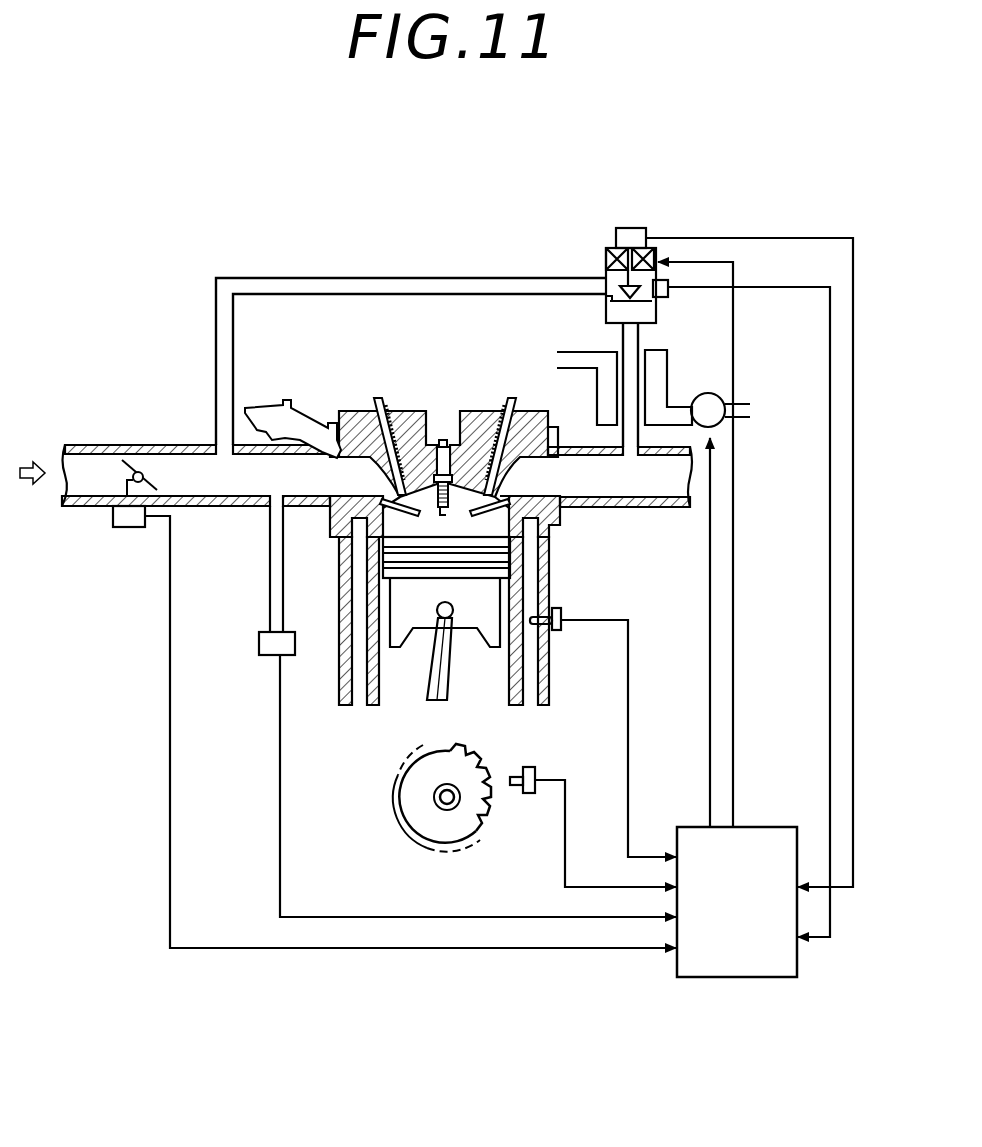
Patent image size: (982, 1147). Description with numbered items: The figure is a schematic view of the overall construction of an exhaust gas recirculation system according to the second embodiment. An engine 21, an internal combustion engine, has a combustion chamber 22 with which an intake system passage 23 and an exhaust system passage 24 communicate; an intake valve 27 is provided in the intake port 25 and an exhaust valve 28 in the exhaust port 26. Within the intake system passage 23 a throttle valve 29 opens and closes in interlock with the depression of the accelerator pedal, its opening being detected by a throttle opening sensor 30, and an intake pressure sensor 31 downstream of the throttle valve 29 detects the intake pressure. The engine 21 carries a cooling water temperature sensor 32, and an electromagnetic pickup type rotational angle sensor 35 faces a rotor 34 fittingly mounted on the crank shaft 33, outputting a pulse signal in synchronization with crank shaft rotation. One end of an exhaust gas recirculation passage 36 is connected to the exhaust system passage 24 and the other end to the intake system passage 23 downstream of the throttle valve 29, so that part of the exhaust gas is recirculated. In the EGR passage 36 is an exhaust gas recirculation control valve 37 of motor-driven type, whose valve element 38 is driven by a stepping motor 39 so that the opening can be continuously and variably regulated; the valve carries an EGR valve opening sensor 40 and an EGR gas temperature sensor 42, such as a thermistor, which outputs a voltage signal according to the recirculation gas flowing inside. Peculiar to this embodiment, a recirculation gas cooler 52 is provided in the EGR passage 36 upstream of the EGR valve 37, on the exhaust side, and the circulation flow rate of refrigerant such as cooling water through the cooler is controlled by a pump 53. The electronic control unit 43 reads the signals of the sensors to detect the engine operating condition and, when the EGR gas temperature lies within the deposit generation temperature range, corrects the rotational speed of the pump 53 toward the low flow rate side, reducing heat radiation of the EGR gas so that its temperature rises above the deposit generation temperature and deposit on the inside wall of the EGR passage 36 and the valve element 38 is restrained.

The engine 21 is at (445, 426).
The combustion chamber 22 is at (492, 526).
The intake system passage 23 is at (110, 445).
The exhaust system passage 24 is at (716, 443).
The intake port 25 is at (360, 440).
The exhaust port 26 is at (535, 470).
The intake valve 27 is at (336, 528).
The exhaust valve 28 is at (558, 517).
The throttle valve 29 is at (140, 460).
The throttle opening sensor 30 is at (127, 528).
The intake pressure sensor 31 is at (260, 643).
The cooling water temperature sensor 32 is at (562, 617).
The crank shaft 33 is at (455, 806).
The rotor 34 is at (403, 778).
The rotational angle sensor 35 is at (533, 768).
The exhaust gas recirculation passage 36 is at (438, 278).
The exhaust gas recirculation control valve 37 is at (628, 242).
The valve element 38 is at (606, 300).
The stepping motor 39 is at (606, 256).
The EGR valve opening sensor 40 is at (636, 228).
The EGR gas temperature sensor 42 is at (670, 284).
The electronic control unit 43 is at (731, 978).
The recirculation gas cooler 52 is at (668, 368).
The pump 53 is at (714, 394).